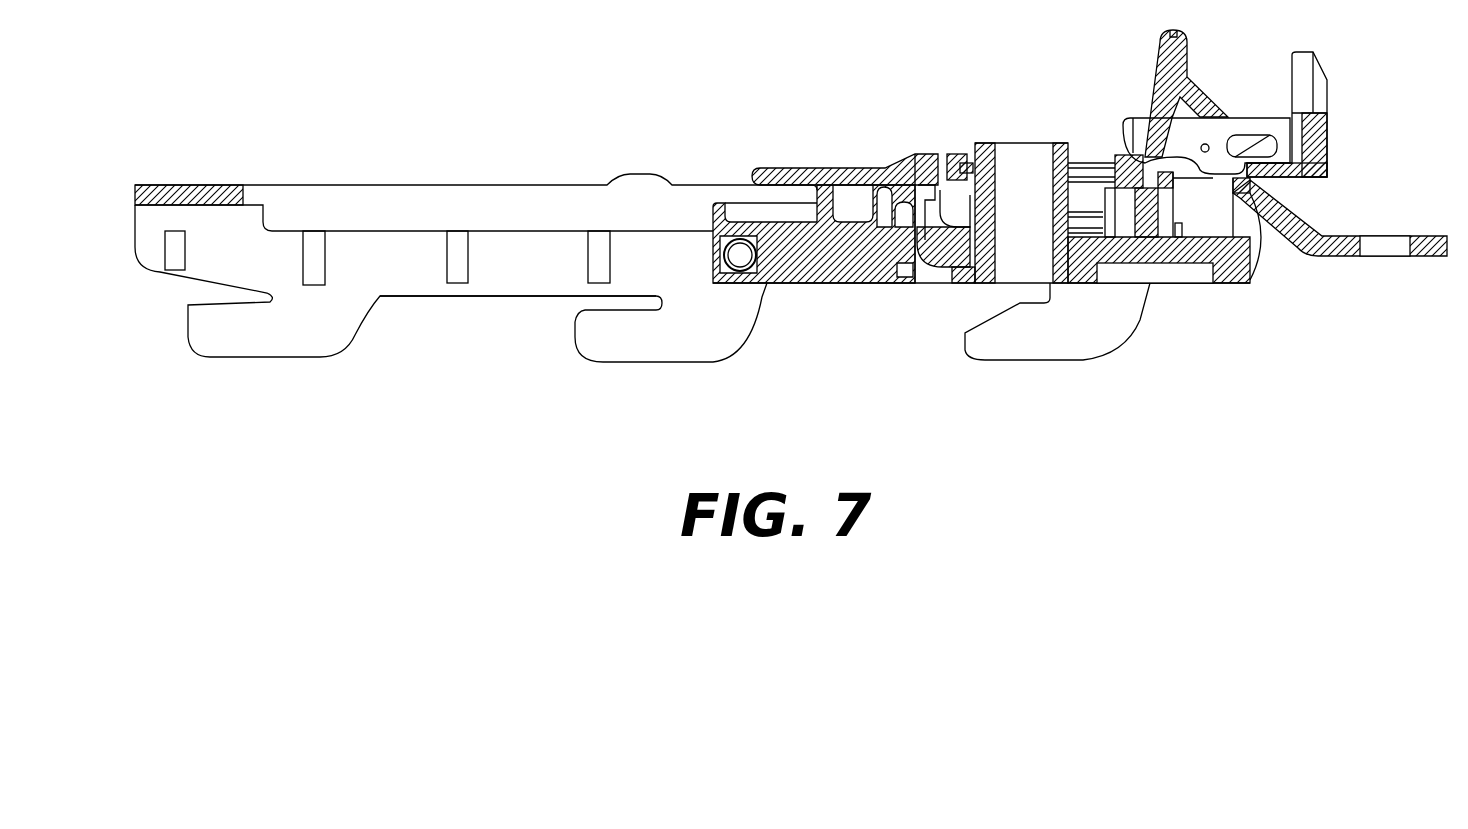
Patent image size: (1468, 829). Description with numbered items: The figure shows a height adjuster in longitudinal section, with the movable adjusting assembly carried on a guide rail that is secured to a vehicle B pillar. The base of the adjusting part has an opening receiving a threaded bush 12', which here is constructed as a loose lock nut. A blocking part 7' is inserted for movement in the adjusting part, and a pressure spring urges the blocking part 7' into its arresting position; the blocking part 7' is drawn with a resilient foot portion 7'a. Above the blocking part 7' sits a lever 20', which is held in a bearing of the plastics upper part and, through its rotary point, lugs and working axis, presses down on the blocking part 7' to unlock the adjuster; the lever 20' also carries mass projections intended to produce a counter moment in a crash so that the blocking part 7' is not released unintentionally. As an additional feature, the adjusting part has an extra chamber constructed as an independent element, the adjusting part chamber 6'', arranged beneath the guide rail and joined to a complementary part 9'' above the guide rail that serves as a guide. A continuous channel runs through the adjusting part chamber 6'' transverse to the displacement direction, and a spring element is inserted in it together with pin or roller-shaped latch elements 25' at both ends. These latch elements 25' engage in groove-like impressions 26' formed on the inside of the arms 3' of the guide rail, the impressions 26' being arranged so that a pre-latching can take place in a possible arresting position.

The blocking part 7' is at (476, 220).
The resilient latch foot 7'a is at (1059, 350).
The arms of the guide rail 3' is at (518, 315).
The groove-like impressions 26' is at (387, 307).
The latch elements 25' is at (781, 301).
The adjusting part chamber 6'' is at (981, 274).
The complementary part 9'' is at (845, 147).
The threaded bush 12' is at (1039, 181).
The lever 20' is at (1173, 94).